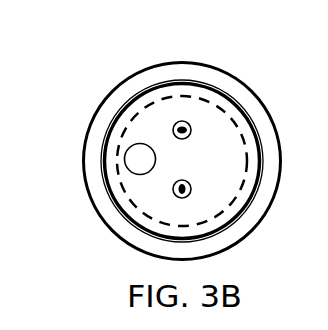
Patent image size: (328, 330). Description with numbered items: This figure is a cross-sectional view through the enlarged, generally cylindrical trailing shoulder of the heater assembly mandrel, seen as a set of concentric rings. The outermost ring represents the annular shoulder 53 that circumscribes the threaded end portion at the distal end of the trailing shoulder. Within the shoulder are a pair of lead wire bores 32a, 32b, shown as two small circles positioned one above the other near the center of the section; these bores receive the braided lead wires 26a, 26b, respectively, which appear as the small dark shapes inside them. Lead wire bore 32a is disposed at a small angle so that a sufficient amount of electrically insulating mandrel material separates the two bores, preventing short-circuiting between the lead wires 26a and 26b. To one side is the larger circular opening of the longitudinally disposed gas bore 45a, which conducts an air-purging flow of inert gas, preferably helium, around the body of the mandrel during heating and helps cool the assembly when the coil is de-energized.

The annular shoulder 53 is at (262, 103).
The gas bore 45a is at (125, 160).
The braided lead wire 26a is at (173, 127).
The braided lead wire 26b is at (176, 197).
The lead wire bore 32a is at (186, 121).
The lead wire bore 32b is at (187, 198).